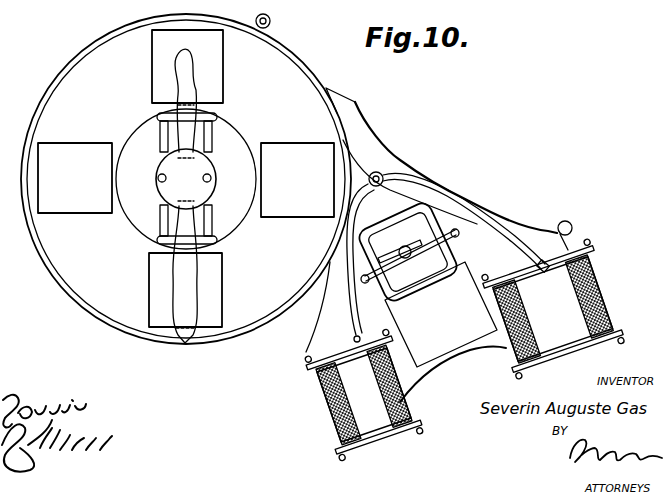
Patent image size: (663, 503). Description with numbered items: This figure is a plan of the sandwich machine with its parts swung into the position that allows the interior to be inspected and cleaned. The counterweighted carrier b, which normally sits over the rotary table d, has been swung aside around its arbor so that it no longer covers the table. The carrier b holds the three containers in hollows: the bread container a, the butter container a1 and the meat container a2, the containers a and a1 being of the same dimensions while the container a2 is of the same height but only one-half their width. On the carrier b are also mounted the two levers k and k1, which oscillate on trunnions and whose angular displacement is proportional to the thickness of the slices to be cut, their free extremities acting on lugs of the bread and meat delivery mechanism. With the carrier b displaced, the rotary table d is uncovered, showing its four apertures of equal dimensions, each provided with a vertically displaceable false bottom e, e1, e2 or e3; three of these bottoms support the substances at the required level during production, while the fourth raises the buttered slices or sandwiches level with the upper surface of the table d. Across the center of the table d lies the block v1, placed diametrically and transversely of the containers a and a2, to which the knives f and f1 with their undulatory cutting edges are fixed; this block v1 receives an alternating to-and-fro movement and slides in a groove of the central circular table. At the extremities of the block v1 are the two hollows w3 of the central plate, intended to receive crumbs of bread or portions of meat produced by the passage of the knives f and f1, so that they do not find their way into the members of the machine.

The rotary table d is at (186, 179).
The false bottom e is at (185, 290).
The false bottom e1 is at (297, 180).
The false bottom e2 is at (187, 66).
The false bottom e3 is at (75, 178).
The knife f is at (185, 272).
The knife f1 is at (186, 103).
The block v1 is at (214, 213).
The hollows w3 is at (210, 117).
The carrier b is at (458, 364).
The lever k is at (459, 222).
The lever k1 is at (340, 320).
The butter container a1 is at (426, 283).
The bread container a is at (552, 309).
The meat container a2 is at (364, 394).